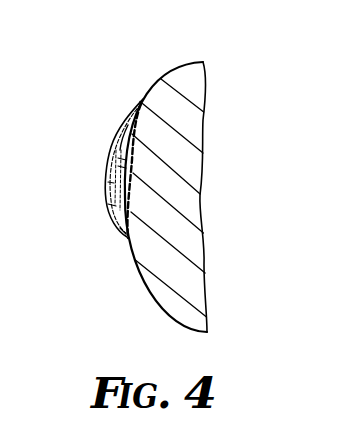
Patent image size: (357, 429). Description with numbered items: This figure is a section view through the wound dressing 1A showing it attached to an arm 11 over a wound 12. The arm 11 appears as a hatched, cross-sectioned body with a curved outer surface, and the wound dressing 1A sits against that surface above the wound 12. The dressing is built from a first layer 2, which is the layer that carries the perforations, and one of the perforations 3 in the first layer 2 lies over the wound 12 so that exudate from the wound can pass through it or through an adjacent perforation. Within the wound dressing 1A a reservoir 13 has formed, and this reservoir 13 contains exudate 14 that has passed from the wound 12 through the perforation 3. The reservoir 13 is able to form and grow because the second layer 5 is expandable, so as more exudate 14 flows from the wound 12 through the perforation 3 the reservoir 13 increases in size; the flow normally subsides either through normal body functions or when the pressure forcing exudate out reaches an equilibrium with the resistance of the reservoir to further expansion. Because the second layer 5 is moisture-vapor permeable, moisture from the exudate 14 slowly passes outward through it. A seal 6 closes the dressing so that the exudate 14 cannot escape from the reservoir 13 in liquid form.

The arm 11 is at (193, 62).
The wound dressing 1A is at (139, 85).
The first layer 2 is at (135, 108).
The reservoir 13 is at (122, 134).
The wound 12 is at (130, 162).
The exudate 14 is at (113, 165).
The second layer 5 is at (104, 188).
The perforation 3 is at (104, 207).
The seal 6 is at (122, 232).